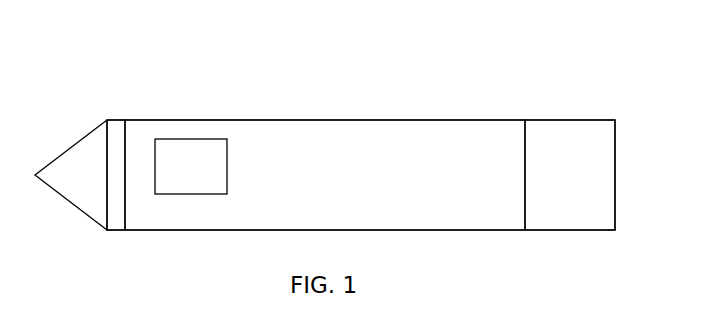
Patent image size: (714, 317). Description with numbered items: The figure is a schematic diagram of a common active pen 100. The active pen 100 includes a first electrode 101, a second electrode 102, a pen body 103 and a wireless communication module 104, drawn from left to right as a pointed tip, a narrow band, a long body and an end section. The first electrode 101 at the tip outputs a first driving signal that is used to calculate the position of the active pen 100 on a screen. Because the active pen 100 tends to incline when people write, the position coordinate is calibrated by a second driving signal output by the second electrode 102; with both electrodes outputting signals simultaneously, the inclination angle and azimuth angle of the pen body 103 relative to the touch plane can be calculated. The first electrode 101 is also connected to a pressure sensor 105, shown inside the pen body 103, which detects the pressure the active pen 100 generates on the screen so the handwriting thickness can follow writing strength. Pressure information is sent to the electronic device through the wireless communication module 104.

The active pen 100 is at (73, 29).
The first electrode 101 is at (65, 150).
The second electrode 102 is at (117, 120).
The pen body 103 is at (325, 118).
The wireless communication module 104 is at (570, 120).
The pressure sensor 105 is at (177, 145).